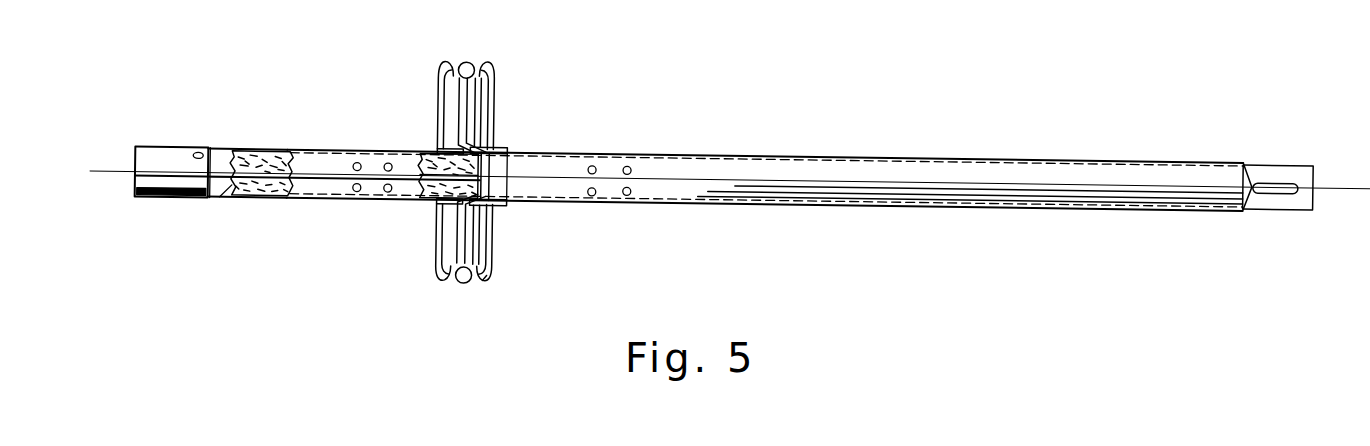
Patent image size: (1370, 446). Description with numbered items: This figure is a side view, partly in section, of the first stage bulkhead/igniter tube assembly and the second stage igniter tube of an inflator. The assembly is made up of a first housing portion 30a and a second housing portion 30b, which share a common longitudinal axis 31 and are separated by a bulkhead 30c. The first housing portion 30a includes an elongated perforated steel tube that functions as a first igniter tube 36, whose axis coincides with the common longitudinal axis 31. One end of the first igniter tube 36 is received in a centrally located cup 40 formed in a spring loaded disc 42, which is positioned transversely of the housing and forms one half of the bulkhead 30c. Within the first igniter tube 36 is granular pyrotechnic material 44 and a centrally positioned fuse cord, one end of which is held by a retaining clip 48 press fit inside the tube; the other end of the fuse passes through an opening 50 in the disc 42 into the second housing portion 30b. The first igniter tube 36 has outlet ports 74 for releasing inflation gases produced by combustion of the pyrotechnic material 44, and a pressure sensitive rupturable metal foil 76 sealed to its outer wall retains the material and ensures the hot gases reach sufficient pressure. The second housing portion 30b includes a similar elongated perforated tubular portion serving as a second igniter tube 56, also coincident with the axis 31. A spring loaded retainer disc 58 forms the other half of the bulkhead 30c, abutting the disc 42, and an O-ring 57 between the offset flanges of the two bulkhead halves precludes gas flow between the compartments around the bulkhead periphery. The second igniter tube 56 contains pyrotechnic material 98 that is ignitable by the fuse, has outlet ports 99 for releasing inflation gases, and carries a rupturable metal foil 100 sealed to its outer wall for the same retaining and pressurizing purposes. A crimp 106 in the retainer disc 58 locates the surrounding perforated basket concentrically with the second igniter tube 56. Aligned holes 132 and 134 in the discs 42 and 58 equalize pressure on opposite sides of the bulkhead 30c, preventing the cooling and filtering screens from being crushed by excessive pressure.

The first housing portion 30a is at (270, 142).
The second housing portion 30b is at (665, 143).
The bulkhead 30c is at (437, 74).
The common longitudinal axis 31 is at (165, 171).
The first igniter tube 36 is at (318, 156).
The cup 40 is at (455, 148).
The spring loaded disc 42 is at (446, 114).
The pyrotechnic material 44 is at (285, 195).
The retaining clip 48 is at (225, 185).
The opening 50 is at (460, 189).
The second igniter tube 56 is at (845, 162).
The O-ring 57 is at (461, 280).
The spring loaded retainer disc 58 is at (490, 94).
The outlet ports 74 is at (357, 159).
The rupturable metal foil 76 is at (338, 197).
The pyrotechnic material 98 is at (497, 197).
The outlet ports 99 is at (593, 159).
The rupturable metal foil 100 is at (638, 148).
The crimp 106 is at (489, 274).
The holes 132 is at (460, 102).
The holes 134 is at (481, 114).